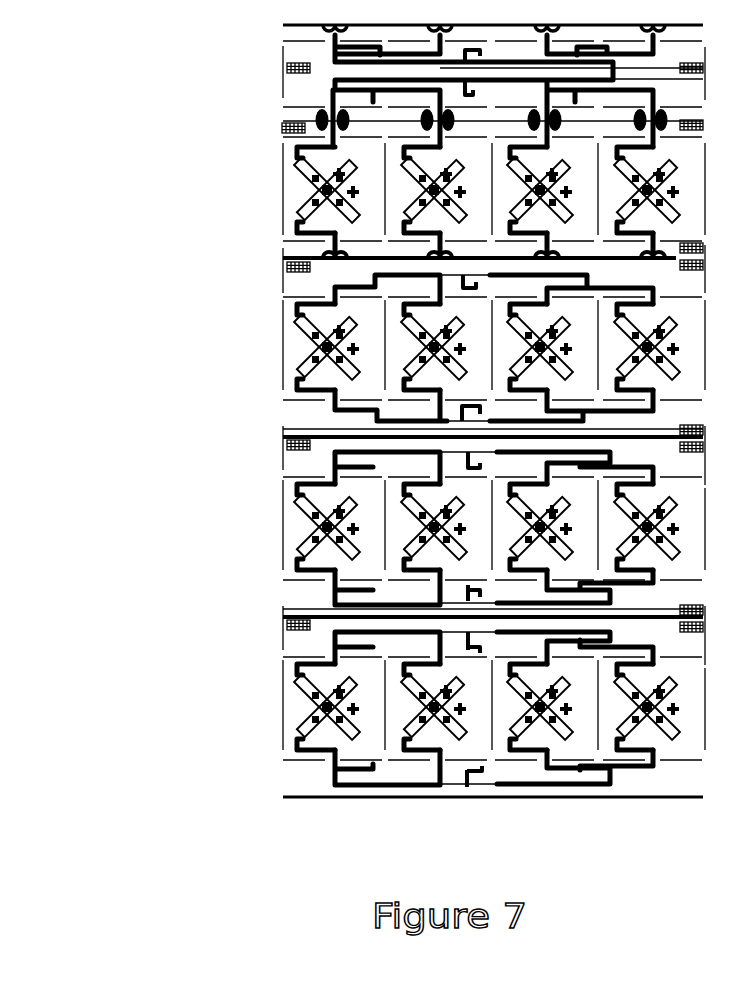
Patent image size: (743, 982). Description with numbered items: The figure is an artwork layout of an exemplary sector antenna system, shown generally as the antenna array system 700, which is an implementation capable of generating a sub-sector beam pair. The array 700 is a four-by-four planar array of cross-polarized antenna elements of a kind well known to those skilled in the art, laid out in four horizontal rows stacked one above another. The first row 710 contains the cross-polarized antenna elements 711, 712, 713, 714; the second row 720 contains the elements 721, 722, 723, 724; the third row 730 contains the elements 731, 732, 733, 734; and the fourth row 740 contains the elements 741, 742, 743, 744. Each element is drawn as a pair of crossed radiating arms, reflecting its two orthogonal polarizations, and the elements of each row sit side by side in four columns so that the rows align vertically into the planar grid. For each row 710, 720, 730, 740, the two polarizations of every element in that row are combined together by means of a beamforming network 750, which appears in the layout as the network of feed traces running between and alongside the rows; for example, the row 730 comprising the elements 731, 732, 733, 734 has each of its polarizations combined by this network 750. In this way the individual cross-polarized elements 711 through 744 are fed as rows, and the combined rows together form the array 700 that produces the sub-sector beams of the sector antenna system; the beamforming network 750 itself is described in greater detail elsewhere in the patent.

The antenna array system 700 is at (388, 411).
The row 710 is at (441, 141).
The row 720 is at (441, 332).
The row 730 is at (443, 528).
The row 740 is at (443, 714).
The beamforming network 750 is at (282, 461).
The cross-polarized antenna element 711 is at (330, 164).
The cross-polarized antenna element 712 is at (437, 164).
The cross-polarized antenna element 713 is at (543, 164).
The cross-polarized antenna element 714 is at (650, 164).
The cross-polarized antenna element 721 is at (330, 321).
The cross-polarized antenna element 722 is at (437, 321).
The cross-polarized antenna element 723 is at (543, 321).
The cross-polarized antenna element 724 is at (650, 321).
The cross-polarized antenna element 731 is at (330, 501).
The cross-polarized antenna element 732 is at (437, 501).
The cross-polarized antenna element 733 is at (543, 501).
The cross-polarized antenna element 734 is at (650, 501).
The cross-polarized antenna element 741 is at (330, 681).
The cross-polarized antenna element 742 is at (437, 681).
The cross-polarized antenna element 743 is at (543, 681).
The cross-polarized antenna element 744 is at (650, 681).